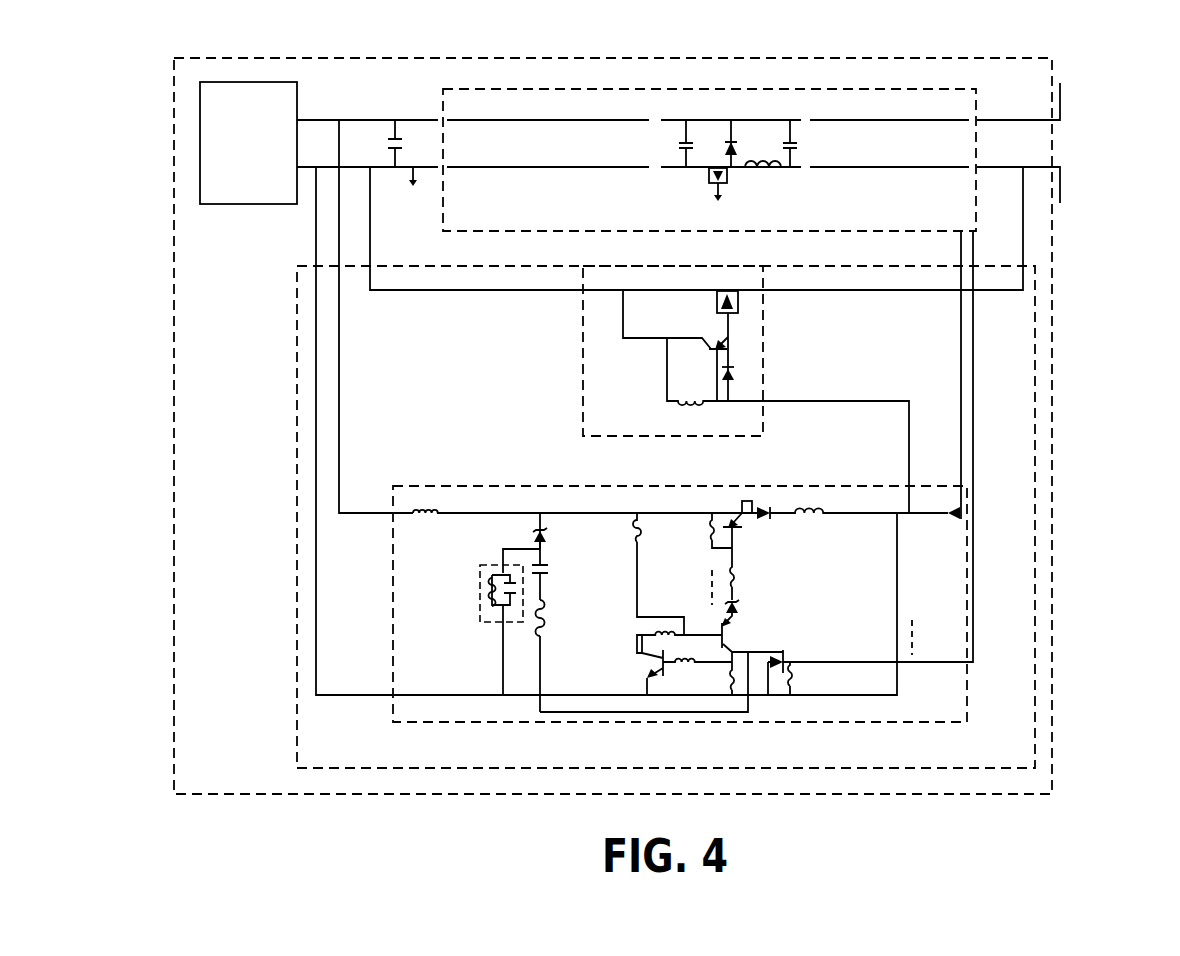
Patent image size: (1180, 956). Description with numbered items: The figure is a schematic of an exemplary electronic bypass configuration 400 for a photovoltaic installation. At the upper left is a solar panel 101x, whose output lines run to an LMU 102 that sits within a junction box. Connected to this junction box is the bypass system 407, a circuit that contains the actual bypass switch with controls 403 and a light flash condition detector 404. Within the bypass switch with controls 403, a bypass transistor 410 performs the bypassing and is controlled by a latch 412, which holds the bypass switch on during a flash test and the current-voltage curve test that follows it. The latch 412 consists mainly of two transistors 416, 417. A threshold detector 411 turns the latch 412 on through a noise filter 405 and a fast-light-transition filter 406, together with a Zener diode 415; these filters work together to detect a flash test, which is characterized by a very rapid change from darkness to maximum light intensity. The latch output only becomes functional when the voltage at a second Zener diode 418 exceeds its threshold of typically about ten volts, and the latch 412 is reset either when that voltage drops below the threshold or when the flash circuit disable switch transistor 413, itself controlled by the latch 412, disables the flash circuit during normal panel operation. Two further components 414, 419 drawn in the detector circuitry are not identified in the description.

The electronic bypass configuration 400 is at (1078, 92).
The solar panel 101x is at (248, 143).
The LMU 102 is at (980, 108).
The bypass system 407 is at (295, 703).
The bypass switch with controls 403 is at (763, 342).
The bypass transistor 410 is at (745, 288).
The light flash condition detector 404 is at (822, 483).
The Zener diode 415 is at (532, 530).
The threshold detector 411 is at (502, 553).
The filter 405 is at (475, 575).
The filter 406 is at (547, 562).
The Zener diode 418 is at (709, 580).
The transistor 414 is at (741, 573).
The transistor 416 is at (742, 604).
The transistor 417 is at (653, 662).
The latch 412 is at (680, 672).
The flash circuit disable switch transistor 413 is at (786, 655).
The resistor 419 is at (758, 685).